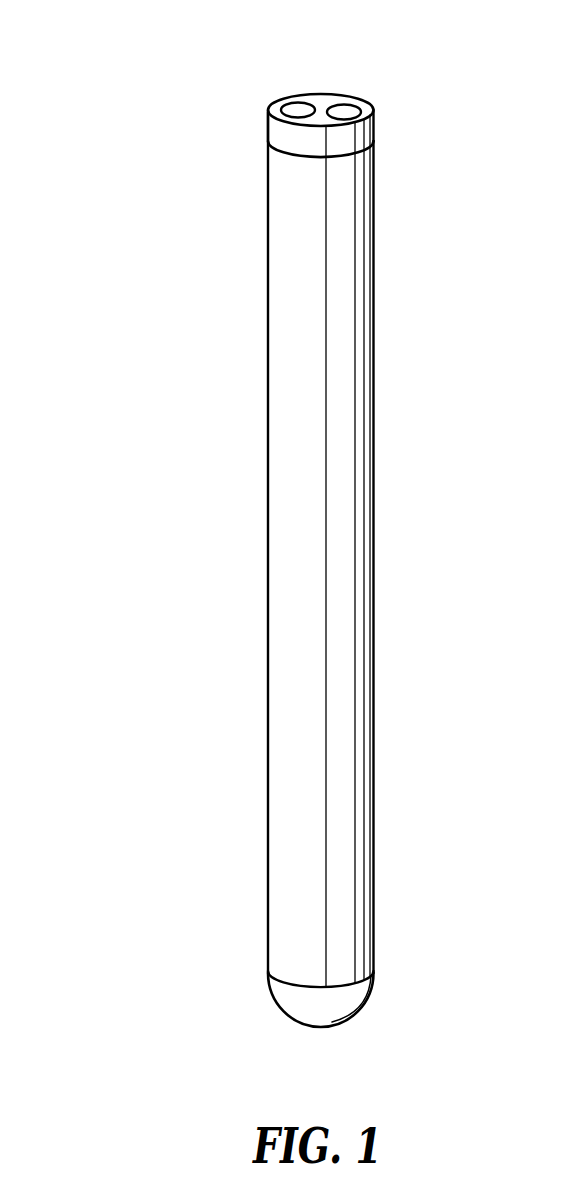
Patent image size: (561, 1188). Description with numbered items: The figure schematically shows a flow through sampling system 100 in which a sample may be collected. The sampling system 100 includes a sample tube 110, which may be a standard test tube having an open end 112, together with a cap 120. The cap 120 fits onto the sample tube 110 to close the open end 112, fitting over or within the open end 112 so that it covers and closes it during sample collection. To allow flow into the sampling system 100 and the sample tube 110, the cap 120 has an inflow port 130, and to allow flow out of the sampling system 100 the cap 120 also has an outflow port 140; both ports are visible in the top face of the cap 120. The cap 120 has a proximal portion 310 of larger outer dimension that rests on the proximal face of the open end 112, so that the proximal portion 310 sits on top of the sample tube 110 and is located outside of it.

The flow through sampling system 100 is at (126, 276).
The sample tube 110 is at (287, 651).
The cap 120 is at (363, 131).
The open end 112 is at (270, 142).
The proximal portion 310 is at (267, 123).
The inflow port 130 is at (297, 108).
The outflow port 140 is at (342, 110).